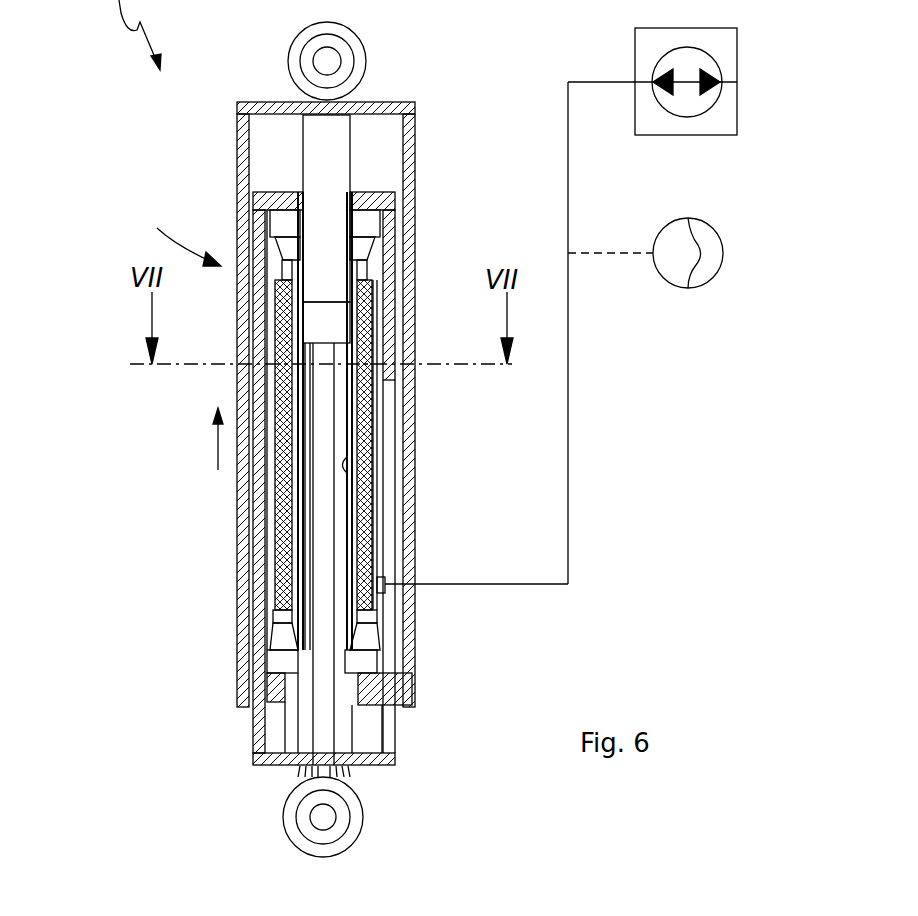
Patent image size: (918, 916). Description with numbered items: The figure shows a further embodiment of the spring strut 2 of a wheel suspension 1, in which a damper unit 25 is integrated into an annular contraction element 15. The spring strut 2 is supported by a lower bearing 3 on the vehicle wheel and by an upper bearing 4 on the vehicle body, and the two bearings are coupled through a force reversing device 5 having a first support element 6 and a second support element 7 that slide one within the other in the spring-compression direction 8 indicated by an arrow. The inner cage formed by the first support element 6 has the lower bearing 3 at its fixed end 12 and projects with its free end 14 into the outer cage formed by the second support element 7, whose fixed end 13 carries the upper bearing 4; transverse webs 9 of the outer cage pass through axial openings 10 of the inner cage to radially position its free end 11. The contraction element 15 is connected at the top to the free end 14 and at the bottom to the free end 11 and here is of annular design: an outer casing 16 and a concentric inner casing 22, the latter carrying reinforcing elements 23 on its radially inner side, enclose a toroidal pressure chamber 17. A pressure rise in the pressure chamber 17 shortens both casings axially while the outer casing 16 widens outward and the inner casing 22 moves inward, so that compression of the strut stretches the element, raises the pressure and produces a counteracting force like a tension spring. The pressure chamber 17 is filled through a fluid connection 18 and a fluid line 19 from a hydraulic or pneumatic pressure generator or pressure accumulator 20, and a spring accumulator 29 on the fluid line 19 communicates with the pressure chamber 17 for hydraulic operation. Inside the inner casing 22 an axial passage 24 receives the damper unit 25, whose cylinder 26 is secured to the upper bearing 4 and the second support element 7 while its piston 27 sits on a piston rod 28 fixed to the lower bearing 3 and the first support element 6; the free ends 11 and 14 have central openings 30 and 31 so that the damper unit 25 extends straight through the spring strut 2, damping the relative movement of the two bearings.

The wheel suspension 1 is at (140, 35).
The spring strut 2 is at (182, 232).
The lower bearing 3 is at (323, 817).
The upper bearing 4 is at (330, 61).
The force reversing device 5 is at (425, 638).
The first support element 6 is at (253, 740).
The second support element 7 is at (240, 487).
The spring-compression direction 8 is at (215, 445).
The transverse webs 9 is at (378, 690).
The axial openings 10 is at (388, 615).
The free end of the second support element 11 is at (367, 706).
The fixed end of the first support element 12 is at (373, 764).
The fixed end of the second support element 13 is at (395, 108).
The free end of the first support element 14 is at (262, 201).
The contraction element 15 is at (390, 325).
The outer casing 16 is at (356, 395).
The pressure chamber 17 is at (372, 435).
The fluid connection 18 is at (382, 577).
The fluid line 19 is at (568, 167).
The pressure generator or pressure accumulator 20 is at (727, 117).
The inner casing 22 is at (350, 460).
The reinforcing elements 23 is at (280, 512).
The axial passage 24 is at (278, 597).
The damper unit 25 is at (300, 633).
The cylinder 26 is at (300, 147).
The piston 27 is at (320, 318).
The piston rod 28 is at (320, 724).
The spring accumulator 29 is at (738, 234).
The central opening 30 is at (272, 692).
The central opening 31 is at (298, 183).